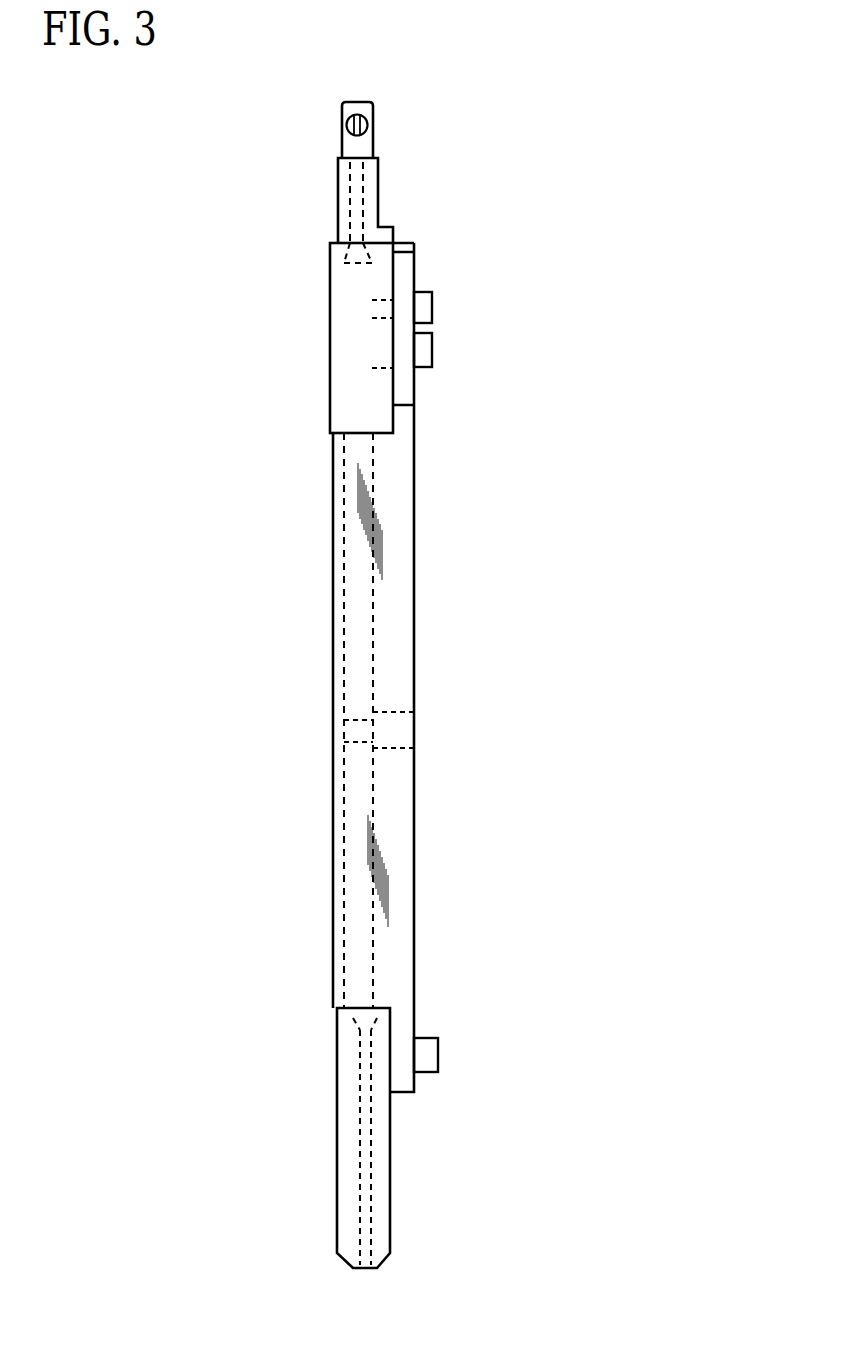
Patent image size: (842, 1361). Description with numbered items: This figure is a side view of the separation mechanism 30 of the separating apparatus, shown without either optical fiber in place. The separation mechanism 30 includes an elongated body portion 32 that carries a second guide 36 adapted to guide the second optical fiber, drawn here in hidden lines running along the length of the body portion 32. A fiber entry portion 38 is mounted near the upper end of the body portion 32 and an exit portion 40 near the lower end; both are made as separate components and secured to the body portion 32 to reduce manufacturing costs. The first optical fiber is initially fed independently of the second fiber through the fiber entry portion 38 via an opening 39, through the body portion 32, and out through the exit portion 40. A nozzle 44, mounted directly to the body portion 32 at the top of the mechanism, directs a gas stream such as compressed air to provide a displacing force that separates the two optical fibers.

The separation mechanism 30 is at (598, 129).
The body portion 32 is at (414, 572).
The second guide 36 is at (336, 625).
The fiber entry portion 38 is at (330, 332).
The opening 39 is at (357, 209).
The exit portion 40 is at (345, 1141).
The nozzle 44 is at (368, 120).